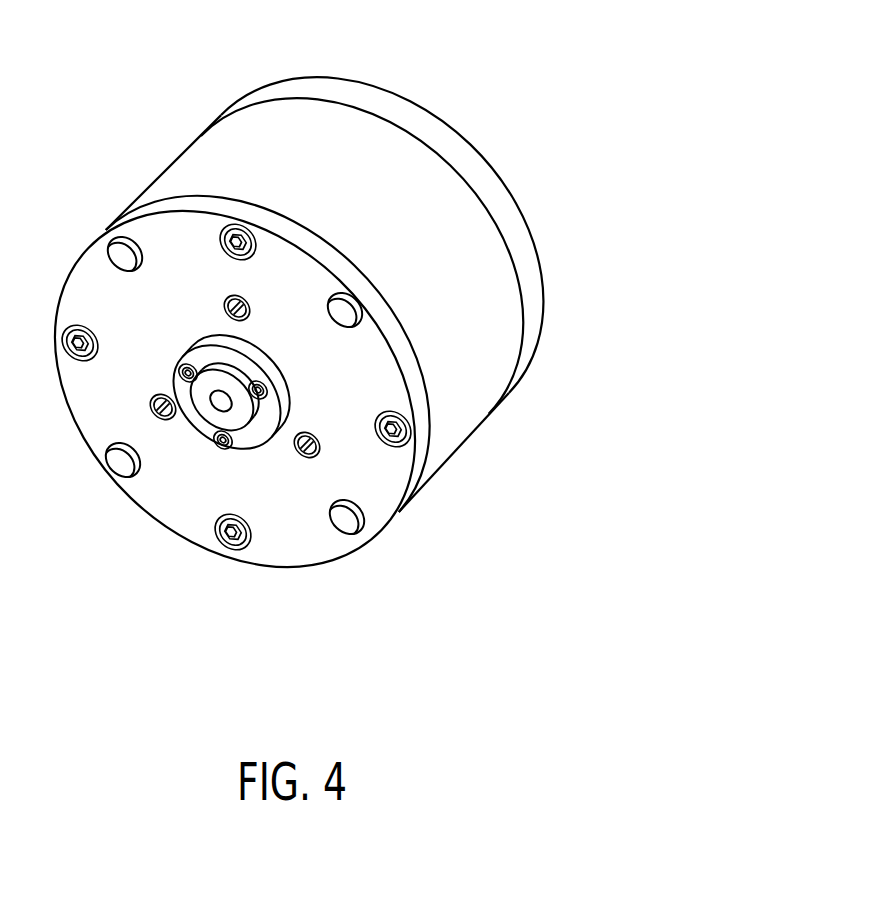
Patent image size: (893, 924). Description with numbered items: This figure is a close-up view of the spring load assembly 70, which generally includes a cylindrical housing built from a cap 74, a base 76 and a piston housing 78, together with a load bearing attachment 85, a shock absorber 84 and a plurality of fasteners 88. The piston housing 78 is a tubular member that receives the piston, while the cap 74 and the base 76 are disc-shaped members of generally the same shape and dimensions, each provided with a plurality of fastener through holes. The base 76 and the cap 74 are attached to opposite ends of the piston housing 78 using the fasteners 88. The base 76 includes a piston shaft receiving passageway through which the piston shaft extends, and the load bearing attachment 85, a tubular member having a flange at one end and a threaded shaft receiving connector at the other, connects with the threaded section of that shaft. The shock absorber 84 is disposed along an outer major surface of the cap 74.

The spring load assembly 70 is at (288, 339).
The cap 74 is at (394, 94).
The base 76 is at (243, 402).
The piston housing 78 is at (152, 182).
The shock absorber 84 is at (452, 131).
The load bearing attachment 85 is at (216, 417).
The fasteners 88 is at (221, 540).